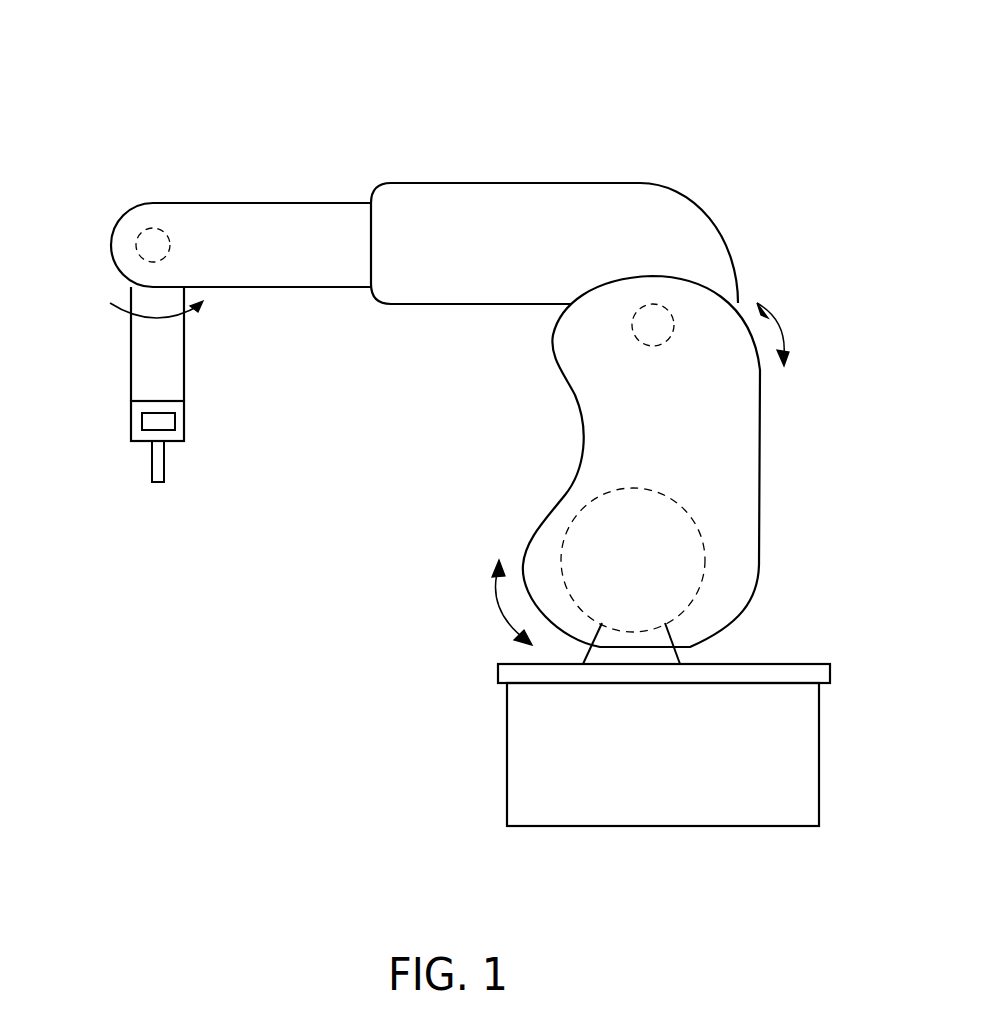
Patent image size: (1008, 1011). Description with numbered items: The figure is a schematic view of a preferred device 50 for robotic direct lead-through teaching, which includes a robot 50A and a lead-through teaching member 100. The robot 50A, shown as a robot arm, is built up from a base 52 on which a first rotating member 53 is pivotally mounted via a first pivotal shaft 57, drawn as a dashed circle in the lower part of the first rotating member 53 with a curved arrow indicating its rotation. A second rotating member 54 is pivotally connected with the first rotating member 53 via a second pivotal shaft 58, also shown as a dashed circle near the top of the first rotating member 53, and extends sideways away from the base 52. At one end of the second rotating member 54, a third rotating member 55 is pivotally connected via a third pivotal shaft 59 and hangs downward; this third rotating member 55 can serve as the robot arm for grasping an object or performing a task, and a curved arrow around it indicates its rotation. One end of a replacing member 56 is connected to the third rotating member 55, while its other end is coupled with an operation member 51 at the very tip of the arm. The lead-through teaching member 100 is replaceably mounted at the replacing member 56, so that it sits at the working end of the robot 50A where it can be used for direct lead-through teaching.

The device for robotic direct lead-through teaching 50 is at (765, 46).
The robot 50A is at (735, 181).
The operation member 51 is at (157, 465).
The base 52 is at (790, 740).
The first rotating member 53 is at (623, 461).
The second rotating member 54 is at (588, 232).
The third rotating member 55 is at (205, 284).
The replacing member 56 is at (178, 414).
The first pivotal shaft 57 is at (573, 563).
The second pivotal shaft 58 is at (653, 325).
The third pivotal shaft 59 is at (150, 242).
The lead-through teaching member 100 is at (150, 424).